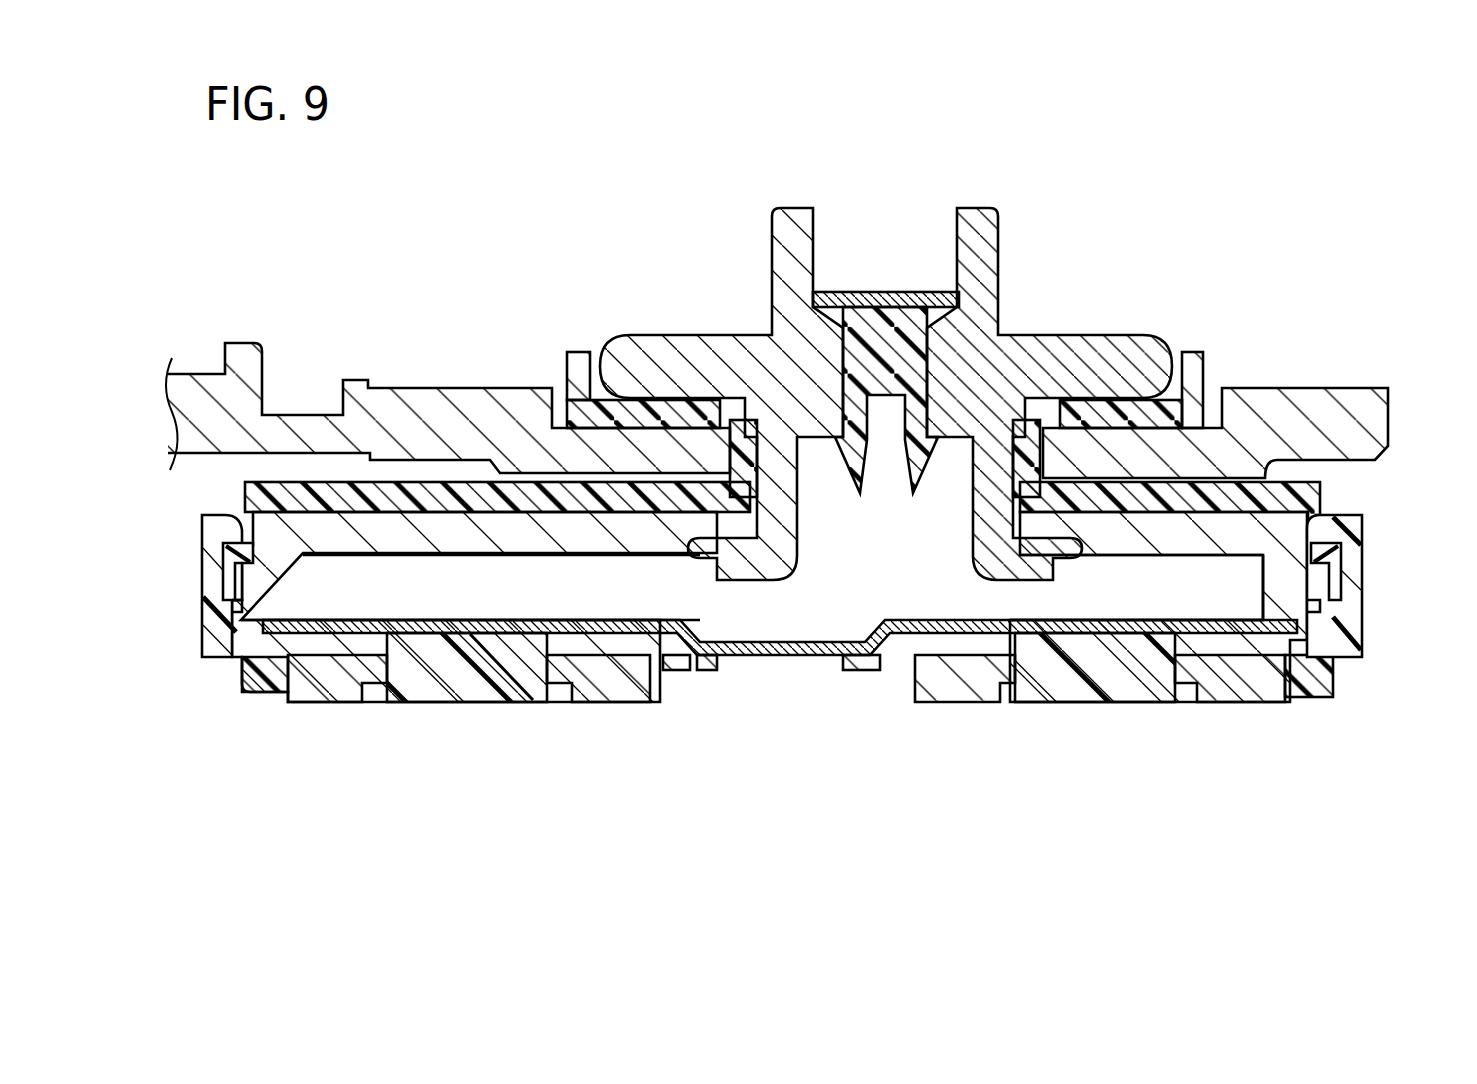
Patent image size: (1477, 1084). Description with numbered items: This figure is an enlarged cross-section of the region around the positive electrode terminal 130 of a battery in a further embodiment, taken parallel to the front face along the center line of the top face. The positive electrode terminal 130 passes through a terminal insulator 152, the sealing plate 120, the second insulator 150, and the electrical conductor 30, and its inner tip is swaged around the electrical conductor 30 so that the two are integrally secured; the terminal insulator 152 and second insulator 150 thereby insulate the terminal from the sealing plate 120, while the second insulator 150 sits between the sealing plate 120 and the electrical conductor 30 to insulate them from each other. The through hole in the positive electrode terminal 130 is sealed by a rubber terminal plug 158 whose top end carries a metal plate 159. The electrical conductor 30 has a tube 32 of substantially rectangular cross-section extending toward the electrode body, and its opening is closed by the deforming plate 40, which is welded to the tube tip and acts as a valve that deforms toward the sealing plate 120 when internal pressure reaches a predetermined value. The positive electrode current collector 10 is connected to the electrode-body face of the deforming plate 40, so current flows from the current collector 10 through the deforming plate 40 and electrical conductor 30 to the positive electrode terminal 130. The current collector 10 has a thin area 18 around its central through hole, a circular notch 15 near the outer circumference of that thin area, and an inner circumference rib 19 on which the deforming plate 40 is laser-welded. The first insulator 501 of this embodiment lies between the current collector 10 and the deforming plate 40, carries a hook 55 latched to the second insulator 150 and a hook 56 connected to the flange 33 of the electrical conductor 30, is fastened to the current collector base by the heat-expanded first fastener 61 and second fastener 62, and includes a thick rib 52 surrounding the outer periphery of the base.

The positive electrode current collector 10 is at (320, 682).
The notch 15 is at (674, 672).
The thin area 18 is at (705, 672).
The inner circumference rib 19 is at (858, 672).
The electrical conductor 30 is at (418, 540).
The tube 32 is at (300, 586).
The flange 33 is at (238, 617).
The deforming plate 40 is at (492, 642).
The rib 52 is at (262, 680).
The hook 55 is at (220, 508).
The hook 56 is at (218, 590).
The first fastener 61 is at (525, 692).
The second fastener 62 is at (1068, 692).
The sealing plate 120 is at (468, 400).
The positive electrode terminal 130 is at (666, 345).
The second insulator 150 is at (320, 480).
The terminal insulator 152 is at (578, 370).
The terminal plug 158 is at (863, 300).
The metal plate 159 is at (915, 292).
The first insulator 501 is at (212, 558).